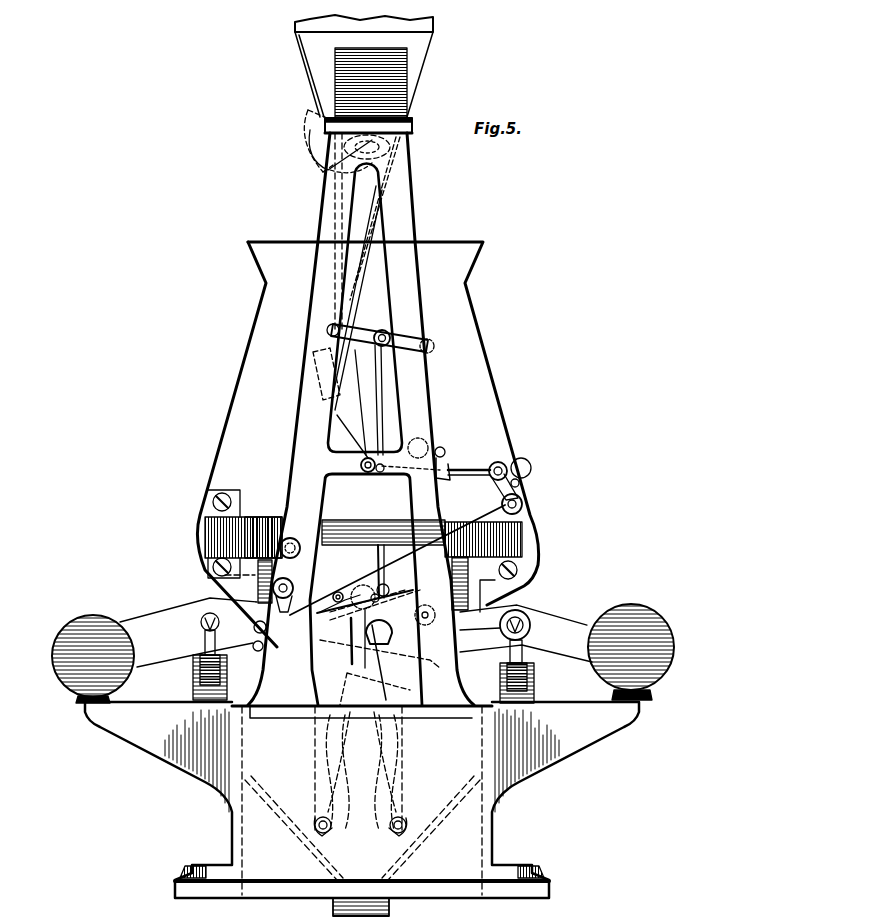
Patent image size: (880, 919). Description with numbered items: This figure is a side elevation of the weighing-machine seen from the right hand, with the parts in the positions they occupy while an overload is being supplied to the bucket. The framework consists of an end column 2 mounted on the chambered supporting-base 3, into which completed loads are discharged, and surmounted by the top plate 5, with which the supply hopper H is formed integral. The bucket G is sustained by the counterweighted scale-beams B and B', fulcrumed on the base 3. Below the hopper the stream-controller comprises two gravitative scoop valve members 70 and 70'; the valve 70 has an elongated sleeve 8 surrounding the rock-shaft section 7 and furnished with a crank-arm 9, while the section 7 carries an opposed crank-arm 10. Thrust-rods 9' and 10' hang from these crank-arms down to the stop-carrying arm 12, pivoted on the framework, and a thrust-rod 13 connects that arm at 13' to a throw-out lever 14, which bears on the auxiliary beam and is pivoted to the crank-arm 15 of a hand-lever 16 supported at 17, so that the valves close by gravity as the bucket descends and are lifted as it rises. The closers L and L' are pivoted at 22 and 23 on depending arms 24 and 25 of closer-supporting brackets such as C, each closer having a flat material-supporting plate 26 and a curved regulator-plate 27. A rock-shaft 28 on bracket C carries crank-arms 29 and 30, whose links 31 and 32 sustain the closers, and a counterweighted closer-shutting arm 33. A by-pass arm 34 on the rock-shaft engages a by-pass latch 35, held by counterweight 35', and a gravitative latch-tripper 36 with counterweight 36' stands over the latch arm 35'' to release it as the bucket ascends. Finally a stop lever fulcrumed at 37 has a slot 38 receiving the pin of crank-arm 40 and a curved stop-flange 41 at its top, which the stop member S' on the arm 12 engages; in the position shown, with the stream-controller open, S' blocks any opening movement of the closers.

The supply chute or hopper H is at (300, 48).
The top plate 5 is at (368, 50).
The crank-arm 9 is at (368, 107).
The gravitative scoop valve member 70' is at (393, 120).
The gravitative scoop valve member 70 is at (301, 141).
The rock-shaft section 7 is at (326, 162).
The crank-arm 10 is at (393, 218).
The end frame or column 2 is at (312, 386).
The thrust-rod 9' is at (316, 231).
The thrust-rod 10' is at (373, 298).
The elongated sleeve 8 is at (340, 418).
The thrust-rod 13 is at (398, 400).
The stop-carrying arm 12 is at (352, 328).
The stop member S' is at (404, 328).
The curved stop-flange 41 is at (322, 350).
The bucket G is at (253, 368).
The fulcrum 37 is at (360, 464).
The counterweight 36' is at (422, 434).
The gravitative latch-tripper 36 is at (456, 455).
The arm on by-pass latch 35'' is at (474, 461).
The by-pass latch 35 is at (510, 466).
The counterweight 35' is at (537, 471).
The closer-sustaining link or connector 31 is at (328, 548).
The hand-lever 16 is at (275, 568).
The crank-arm of hand-lever 15 is at (292, 592).
The by-pass arm 34 is at (420, 560).
The counterweighted scale-beam B' is at (519, 591).
The crank-arm 40 is at (383, 535).
The elongated slot 38 is at (382, 560).
The rock-shaft 28 is at (376, 590).
The crank-arm 29 is at (386, 584).
The crank-arm 30 is at (340, 590).
The throw-out lever 14 is at (395, 594).
The closer-sustaining link or connector 32 is at (426, 606).
The pivotal connection 13' is at (391, 633).
The counterweighted closer-shutting arm 33 is at (385, 645).
The material-supporting plate 26 is at (378, 660).
The closer-supporting bracket C is at (361, 699).
The pivot of hand-lever 17 is at (270, 584).
The counterweighted scale-beam B is at (139, 650).
The chambered supporting-base 3 is at (258, 822).
The angular closer L is at (319, 771).
The angular closer L' is at (400, 771).
The depending arm 24 is at (314, 778).
The depending arm 25 is at (404, 786).
The curved regulator-plate 27 is at (372, 808).
The pivot of closer 22 is at (315, 832).
The pivot of closer 23 is at (398, 838).